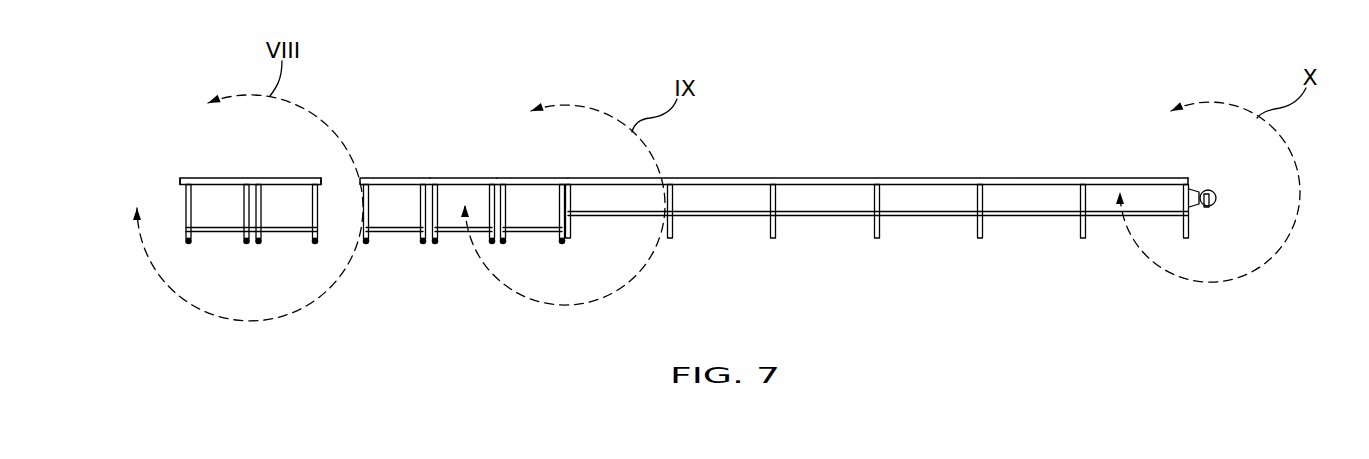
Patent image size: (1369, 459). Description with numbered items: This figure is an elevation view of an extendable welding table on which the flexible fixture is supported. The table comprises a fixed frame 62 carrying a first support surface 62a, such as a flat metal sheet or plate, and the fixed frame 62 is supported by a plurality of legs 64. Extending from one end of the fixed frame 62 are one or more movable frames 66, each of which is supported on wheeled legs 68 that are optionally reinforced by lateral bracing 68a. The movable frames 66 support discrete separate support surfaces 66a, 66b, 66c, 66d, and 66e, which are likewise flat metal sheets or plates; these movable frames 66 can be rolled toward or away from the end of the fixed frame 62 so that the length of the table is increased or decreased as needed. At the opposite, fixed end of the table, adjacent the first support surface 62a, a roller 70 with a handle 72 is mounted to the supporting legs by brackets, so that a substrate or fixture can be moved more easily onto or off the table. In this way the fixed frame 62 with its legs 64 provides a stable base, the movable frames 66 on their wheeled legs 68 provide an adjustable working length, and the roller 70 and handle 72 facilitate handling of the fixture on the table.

The fixed frame 62 is at (878, 168).
The first support surface 62a is at (1010, 177).
The legs 64 is at (571, 225).
The movable frame 66 is at (261, 130).
The support surface 66a is at (533, 177).
The support surface 66b is at (453, 177).
The support surface 66c is at (377, 177).
The support surface 66d is at (307, 177).
The support surface 66e is at (198, 177).
The wheeled legs 68 is at (186, 211).
The lateral bracing 68a is at (395, 226).
The roller 70 is at (1215, 192).
The handle 72 is at (1217, 205).